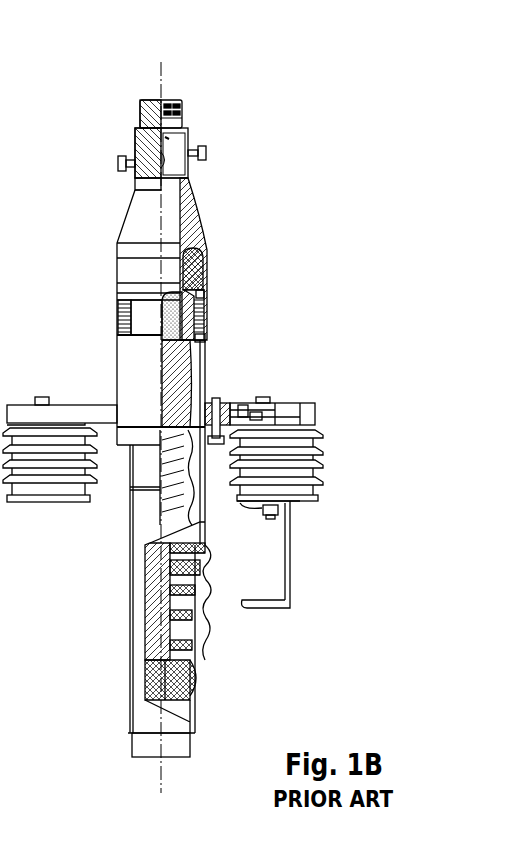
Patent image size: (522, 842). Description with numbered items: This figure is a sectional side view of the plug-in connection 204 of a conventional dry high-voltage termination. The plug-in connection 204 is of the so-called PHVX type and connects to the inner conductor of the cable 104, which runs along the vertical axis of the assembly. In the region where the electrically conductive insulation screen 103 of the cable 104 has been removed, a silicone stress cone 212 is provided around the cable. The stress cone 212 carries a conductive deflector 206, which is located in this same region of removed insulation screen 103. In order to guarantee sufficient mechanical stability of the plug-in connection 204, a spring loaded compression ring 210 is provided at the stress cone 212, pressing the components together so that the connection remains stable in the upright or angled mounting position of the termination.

The plug-in connection 204 is at (106, 80).
The cable 104 is at (170, 218).
The silicone stress cone 212 is at (190, 228).
The conductive deflector 206 is at (197, 270).
The spring loaded compression ring 210 is at (125, 308).
The electrically conductive insulation screen 103 is at (170, 325).